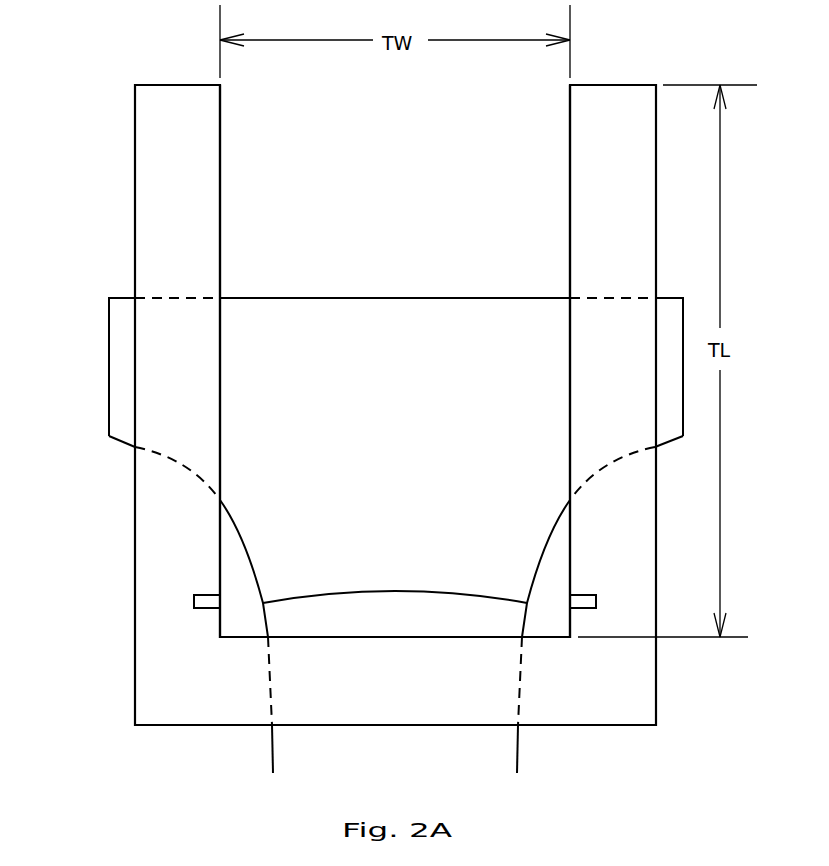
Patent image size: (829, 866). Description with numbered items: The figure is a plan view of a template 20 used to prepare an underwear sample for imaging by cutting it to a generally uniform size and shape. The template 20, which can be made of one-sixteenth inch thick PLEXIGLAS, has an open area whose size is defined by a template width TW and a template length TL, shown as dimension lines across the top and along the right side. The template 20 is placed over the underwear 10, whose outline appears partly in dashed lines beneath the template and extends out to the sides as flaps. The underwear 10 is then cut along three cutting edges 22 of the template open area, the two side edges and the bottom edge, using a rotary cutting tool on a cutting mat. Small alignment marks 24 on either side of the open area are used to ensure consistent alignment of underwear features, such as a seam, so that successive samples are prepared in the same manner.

The underwear 10 is at (123, 325).
The template 20 is at (615, 97).
The cutting edges 22 is at (222, 222).
The alignment marks 24 is at (193, 594).